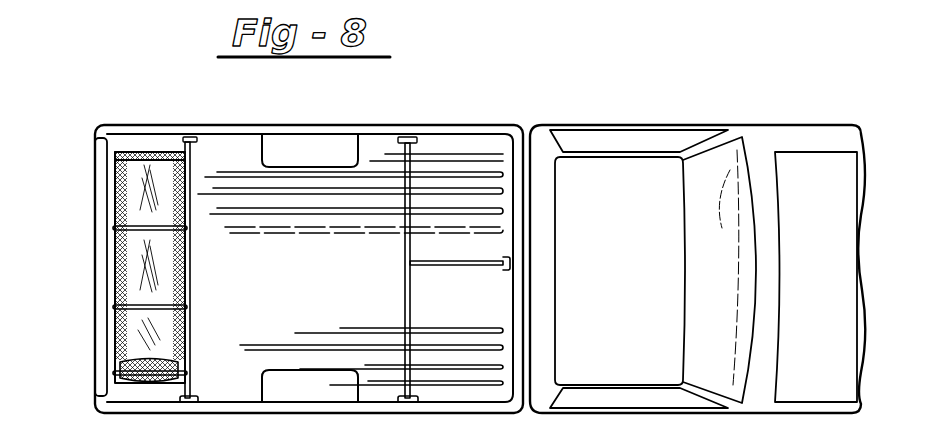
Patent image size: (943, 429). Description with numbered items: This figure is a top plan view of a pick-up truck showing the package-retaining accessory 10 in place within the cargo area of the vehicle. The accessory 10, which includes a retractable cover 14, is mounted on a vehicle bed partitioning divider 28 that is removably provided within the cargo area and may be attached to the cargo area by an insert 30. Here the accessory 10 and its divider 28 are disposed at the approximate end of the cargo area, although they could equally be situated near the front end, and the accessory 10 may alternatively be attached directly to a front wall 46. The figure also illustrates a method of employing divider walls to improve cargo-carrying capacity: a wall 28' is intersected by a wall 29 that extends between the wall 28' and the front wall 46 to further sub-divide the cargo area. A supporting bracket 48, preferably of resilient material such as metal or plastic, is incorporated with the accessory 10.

The package-retaining accessory 10 is at (190, 90).
The retractable cover 14 is at (138, 173).
The vehicle bed partitioning divider 28 is at (227, 245).
The wall 28' is at (434, 235).
The wall 29 is at (439, 266).
The insert 30 is at (195, 397).
The front wall 46 is at (514, 167).
The supporting bracket 48 is at (122, 363).